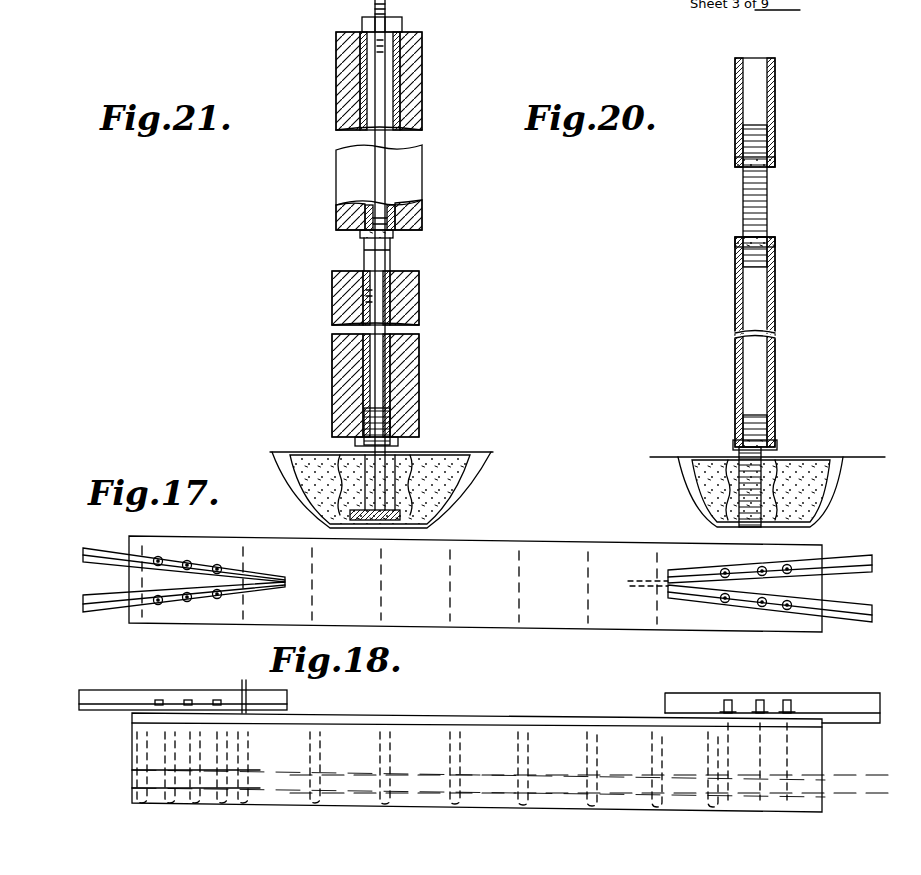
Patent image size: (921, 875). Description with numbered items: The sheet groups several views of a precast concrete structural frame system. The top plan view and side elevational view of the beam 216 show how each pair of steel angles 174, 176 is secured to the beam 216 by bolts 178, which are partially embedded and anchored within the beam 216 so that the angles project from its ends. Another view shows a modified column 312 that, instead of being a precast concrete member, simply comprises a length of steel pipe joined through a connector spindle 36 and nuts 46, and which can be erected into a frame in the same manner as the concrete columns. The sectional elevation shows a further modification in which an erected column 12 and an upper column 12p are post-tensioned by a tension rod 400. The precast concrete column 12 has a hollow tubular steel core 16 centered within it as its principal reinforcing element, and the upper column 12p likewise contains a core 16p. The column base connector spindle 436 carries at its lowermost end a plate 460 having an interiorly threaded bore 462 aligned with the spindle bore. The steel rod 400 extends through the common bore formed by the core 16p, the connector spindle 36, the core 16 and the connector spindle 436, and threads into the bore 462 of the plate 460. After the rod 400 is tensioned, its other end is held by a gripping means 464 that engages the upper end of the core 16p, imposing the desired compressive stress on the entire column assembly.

In FIG. 21, the precast concrete column 12 is at (418, 312).
In FIG. 21, the column 12p is at (410, 88).
In FIG. 21, the hollow tubular core 16 is at (395, 290).
In FIG. 21, the core 16p is at (400, 114).
In FIG. 21, the connector spindle 36 is at (393, 246).
In FIG. 20, the connector spindle 36 is at (768, 205).
In FIG. 20, the nut 46 is at (775, 159).
In FIG. 17, the steel angle 174 is at (100, 548).
In FIG. 17, the steel angle 176 is at (108, 610).
In FIG. 18, the steel angle 176 is at (108, 712).
In FIG. 17, the bolt 178 is at (217, 600).
In FIG. 18, the bolt 178 is at (192, 758).
In FIG. 17, the beam 216 is at (548, 628).
In FIG. 18, the beam 216 is at (498, 716).
In FIG. 20, the column 312 is at (775, 107).
In FIG. 21, the tension rod 400 is at (382, 76).
In FIG. 21, the column base connector spindle 436 is at (395, 452).
In FIG. 21, the plate 460 is at (420, 528).
In FIG. 21, the interiorly threaded bore 462 is at (350, 520).
In FIG. 21, the gripping means 464 is at (402, 24).